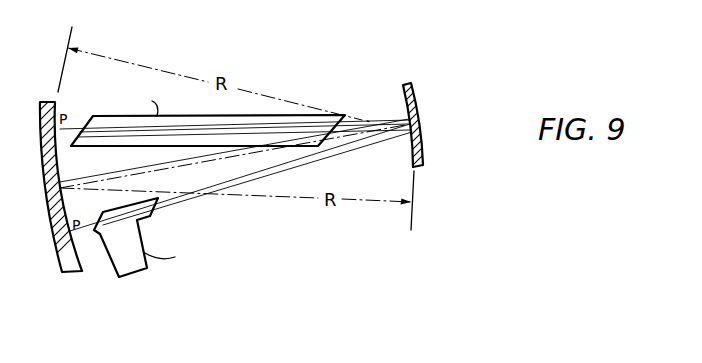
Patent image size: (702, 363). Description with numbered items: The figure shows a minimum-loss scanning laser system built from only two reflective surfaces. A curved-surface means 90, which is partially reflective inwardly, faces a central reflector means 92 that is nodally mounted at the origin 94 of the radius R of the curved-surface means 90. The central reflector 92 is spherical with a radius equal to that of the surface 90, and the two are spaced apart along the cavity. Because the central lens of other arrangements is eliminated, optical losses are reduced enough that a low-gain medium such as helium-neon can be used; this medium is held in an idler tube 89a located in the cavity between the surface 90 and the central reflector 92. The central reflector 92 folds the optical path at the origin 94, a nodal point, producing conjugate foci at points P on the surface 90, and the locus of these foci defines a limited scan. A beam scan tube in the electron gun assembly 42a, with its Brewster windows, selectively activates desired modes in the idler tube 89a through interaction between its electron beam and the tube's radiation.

The curved-surface means 90 is at (54, 102).
The central reflector means 92 is at (402, 94).
The idler tube 89a is at (287, 115).
The electron gun assembly 42a is at (153, 230).
The origin 94 is at (404, 133).